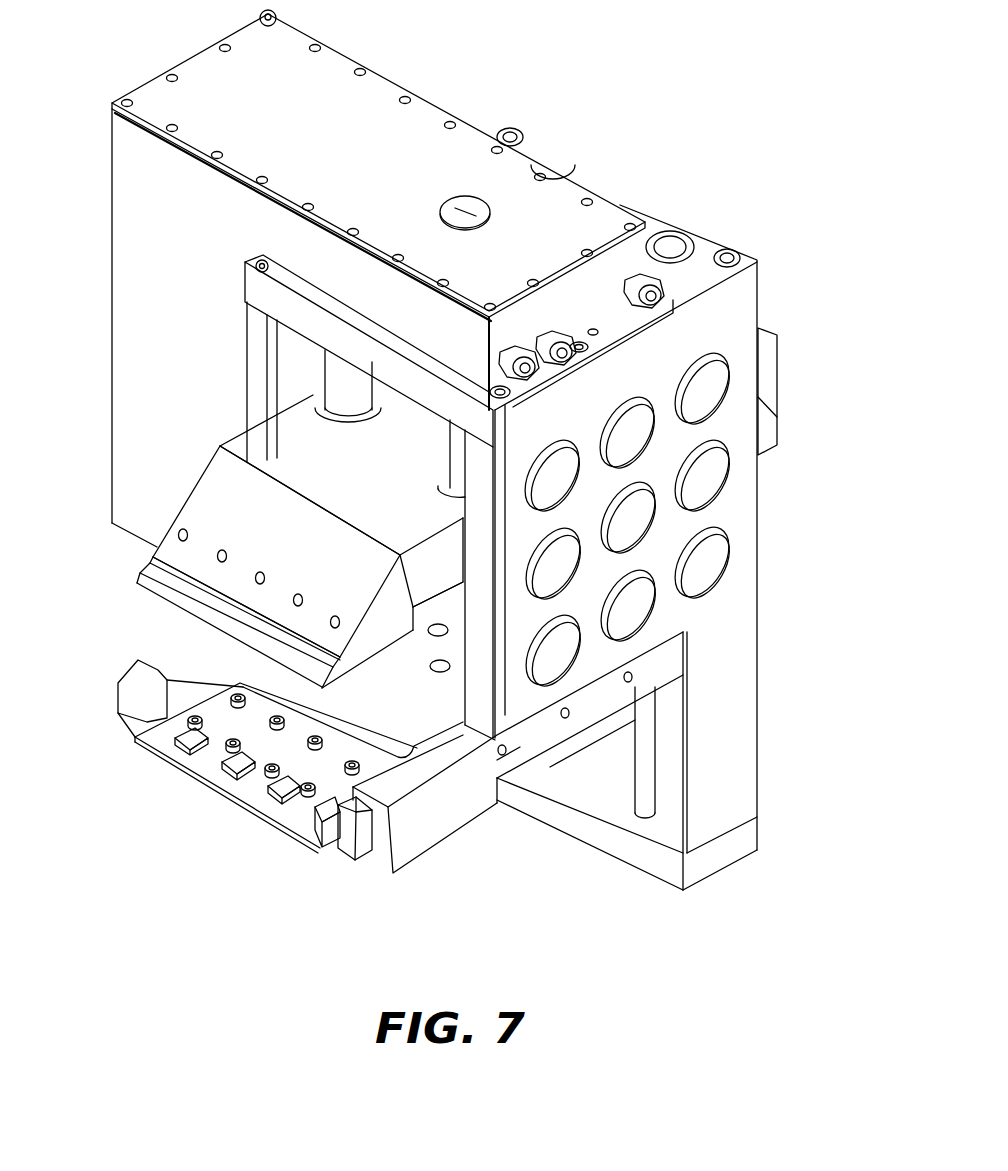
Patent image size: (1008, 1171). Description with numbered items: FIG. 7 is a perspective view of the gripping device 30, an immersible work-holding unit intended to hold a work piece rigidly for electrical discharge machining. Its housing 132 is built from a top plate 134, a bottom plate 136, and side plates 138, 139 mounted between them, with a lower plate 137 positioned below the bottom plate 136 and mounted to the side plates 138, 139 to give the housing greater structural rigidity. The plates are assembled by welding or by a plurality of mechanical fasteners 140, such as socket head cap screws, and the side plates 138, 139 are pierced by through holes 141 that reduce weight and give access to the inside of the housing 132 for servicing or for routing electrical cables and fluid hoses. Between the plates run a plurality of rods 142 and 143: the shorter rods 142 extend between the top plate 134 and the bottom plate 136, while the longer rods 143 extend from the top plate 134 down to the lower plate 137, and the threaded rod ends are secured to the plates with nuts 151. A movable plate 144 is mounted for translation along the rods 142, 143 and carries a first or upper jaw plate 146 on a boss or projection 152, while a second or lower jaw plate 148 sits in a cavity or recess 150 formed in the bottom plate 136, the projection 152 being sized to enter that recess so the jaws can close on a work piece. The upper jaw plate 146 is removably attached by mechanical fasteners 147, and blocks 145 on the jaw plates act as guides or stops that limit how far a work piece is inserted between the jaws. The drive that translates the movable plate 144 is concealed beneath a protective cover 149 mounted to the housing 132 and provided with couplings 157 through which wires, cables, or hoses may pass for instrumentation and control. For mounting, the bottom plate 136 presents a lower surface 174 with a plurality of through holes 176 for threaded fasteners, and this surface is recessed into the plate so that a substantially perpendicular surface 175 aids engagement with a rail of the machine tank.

The gripping device 30 is at (170, 885).
The housing 132 is at (788, 600).
The top plate 134 is at (755, 282).
The bottom plate 136 is at (435, 840).
The lower plate 137 is at (628, 840).
The side plate 138 is at (258, 358).
The side plate 139 is at (740, 712).
The mechanical fasteners 140 is at (510, 133).
The through holes 141 is at (615, 448).
The rods 142 is at (458, 442).
The rods 143 is at (645, 767).
The movable plate 144 is at (773, 373).
The blocks 145 is at (232, 770).
The upper jaw plate 146 is at (137, 582).
The mechanical fasteners 147 is at (350, 770).
The lower jaw plate 148 is at (258, 815).
The protective cover 149 is at (205, 65).
The cavity or recess 150 is at (373, 724).
The nuts 151 is at (553, 165).
The boss or projection 152 is at (412, 615).
The couplings 157 is at (640, 285).
The lower surface 174 is at (550, 752).
The surface 175 is at (497, 805).
The through holes 176 is at (773, 420).